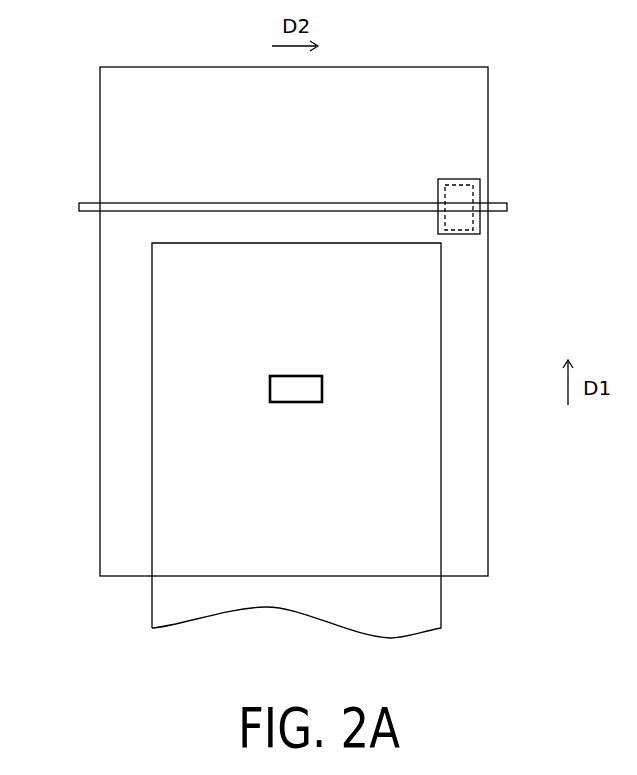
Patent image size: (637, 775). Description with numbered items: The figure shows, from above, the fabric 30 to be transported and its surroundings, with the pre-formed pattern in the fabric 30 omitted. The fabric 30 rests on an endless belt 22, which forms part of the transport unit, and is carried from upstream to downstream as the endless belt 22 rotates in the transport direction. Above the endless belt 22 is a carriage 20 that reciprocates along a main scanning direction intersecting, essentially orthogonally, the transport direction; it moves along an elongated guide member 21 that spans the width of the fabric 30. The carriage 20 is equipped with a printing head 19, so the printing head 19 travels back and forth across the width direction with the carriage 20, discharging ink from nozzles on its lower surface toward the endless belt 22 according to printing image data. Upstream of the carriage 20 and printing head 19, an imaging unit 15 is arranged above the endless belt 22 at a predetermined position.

The imaging unit 15 is at (287, 378).
The printing head 19 is at (473, 236).
The carriage 20 is at (465, 179).
The guide member 21 is at (93, 203).
The endless belt 22 is at (485, 492).
The fabric 30 is at (158, 591).